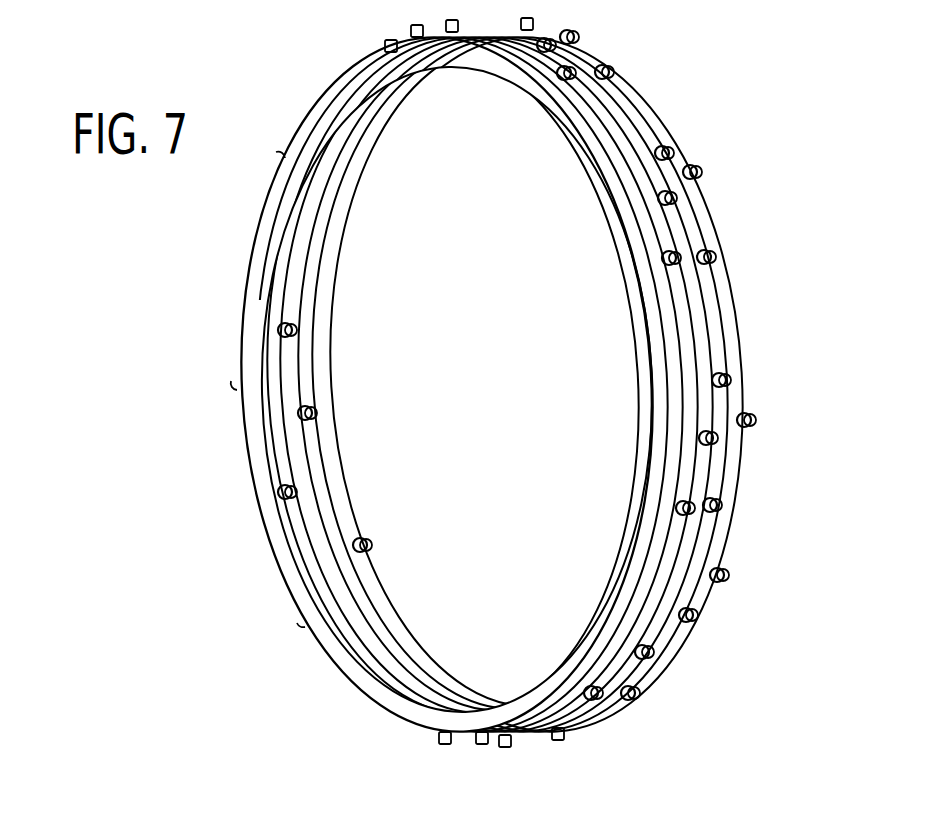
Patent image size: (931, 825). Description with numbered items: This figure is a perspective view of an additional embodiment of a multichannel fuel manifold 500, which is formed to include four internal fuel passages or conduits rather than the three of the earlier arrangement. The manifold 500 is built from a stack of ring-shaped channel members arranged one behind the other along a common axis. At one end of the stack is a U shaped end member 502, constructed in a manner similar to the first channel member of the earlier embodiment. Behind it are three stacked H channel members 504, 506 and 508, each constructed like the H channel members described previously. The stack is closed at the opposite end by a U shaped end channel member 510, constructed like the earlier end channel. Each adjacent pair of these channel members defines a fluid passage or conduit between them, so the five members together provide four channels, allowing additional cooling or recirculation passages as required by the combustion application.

The multichannel fuel manifold 500 is at (690, 94).
The U shaped end member 502 is at (640, 292).
The H channel member 504 is at (682, 318).
The H channel member 506 is at (705, 402).
The H channel member 508 is at (717, 328).
The U shaped end channel member 510 is at (712, 218).